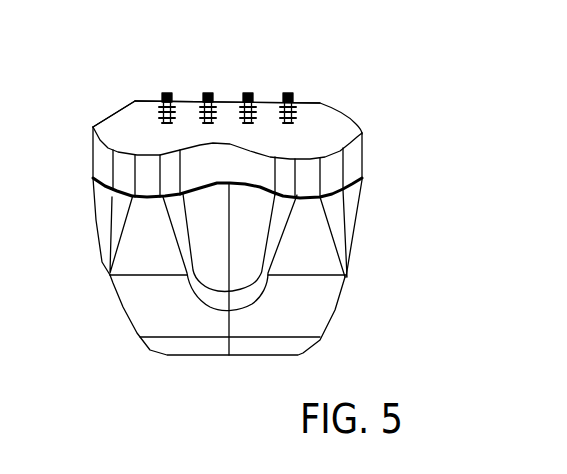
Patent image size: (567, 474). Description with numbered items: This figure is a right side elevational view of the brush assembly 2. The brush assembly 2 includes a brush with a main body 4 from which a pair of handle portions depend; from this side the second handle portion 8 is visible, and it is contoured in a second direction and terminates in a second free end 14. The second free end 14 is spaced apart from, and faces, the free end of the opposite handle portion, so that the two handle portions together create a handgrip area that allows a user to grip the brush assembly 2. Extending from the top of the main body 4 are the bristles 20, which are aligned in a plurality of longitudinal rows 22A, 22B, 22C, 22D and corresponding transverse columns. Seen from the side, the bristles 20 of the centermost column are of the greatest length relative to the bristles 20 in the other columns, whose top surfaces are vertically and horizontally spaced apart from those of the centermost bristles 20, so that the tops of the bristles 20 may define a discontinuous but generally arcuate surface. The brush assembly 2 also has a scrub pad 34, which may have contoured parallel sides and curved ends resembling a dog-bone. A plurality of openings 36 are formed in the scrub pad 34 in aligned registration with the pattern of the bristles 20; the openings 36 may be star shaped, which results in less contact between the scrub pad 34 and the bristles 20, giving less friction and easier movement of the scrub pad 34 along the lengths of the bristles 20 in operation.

The brush assembly 2 is at (253, 183).
The main body 4 is at (100, 239).
The second handle portion 8 is at (313, 240).
The second free end 14 is at (308, 314).
The bristles 20 is at (297, 103).
The longitudinal row 22A is at (290, 88).
The longitudinal row 22B is at (252, 82).
The longitudinal row 22C is at (208, 82).
The longitudinal row 22D is at (163, 85).
The scrub pad 34 is at (113, 117).
The openings 36 is at (300, 132).